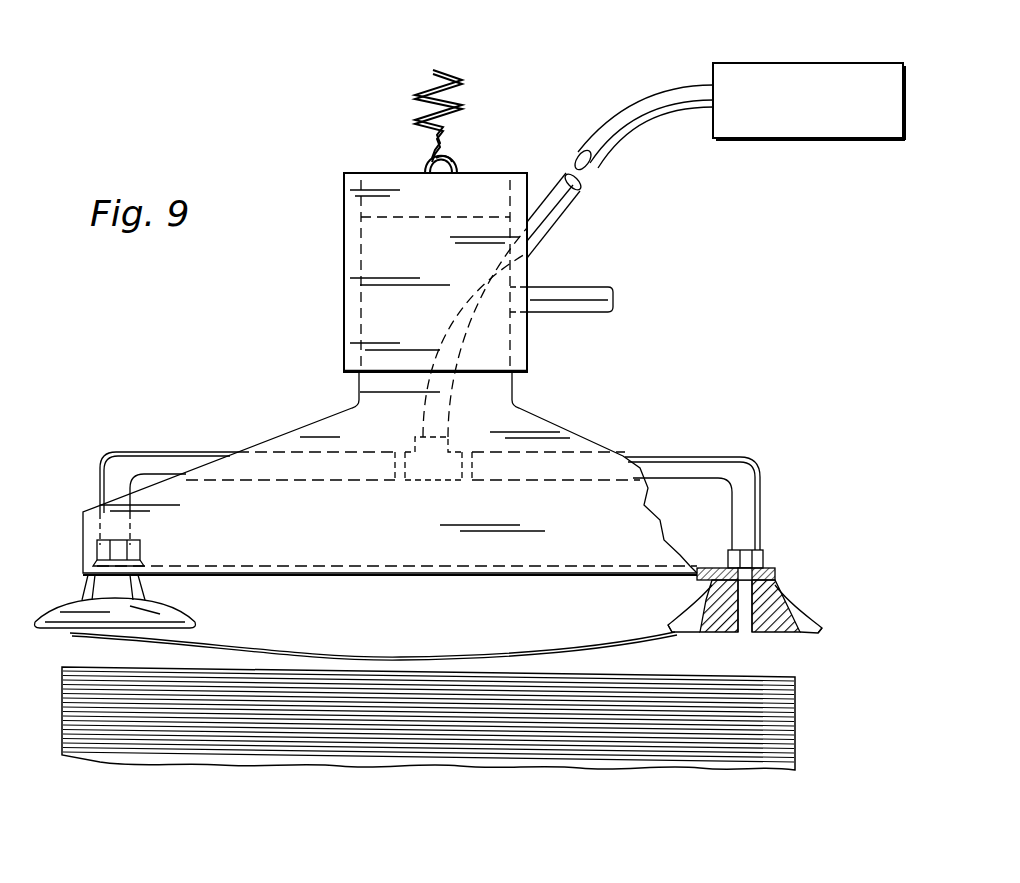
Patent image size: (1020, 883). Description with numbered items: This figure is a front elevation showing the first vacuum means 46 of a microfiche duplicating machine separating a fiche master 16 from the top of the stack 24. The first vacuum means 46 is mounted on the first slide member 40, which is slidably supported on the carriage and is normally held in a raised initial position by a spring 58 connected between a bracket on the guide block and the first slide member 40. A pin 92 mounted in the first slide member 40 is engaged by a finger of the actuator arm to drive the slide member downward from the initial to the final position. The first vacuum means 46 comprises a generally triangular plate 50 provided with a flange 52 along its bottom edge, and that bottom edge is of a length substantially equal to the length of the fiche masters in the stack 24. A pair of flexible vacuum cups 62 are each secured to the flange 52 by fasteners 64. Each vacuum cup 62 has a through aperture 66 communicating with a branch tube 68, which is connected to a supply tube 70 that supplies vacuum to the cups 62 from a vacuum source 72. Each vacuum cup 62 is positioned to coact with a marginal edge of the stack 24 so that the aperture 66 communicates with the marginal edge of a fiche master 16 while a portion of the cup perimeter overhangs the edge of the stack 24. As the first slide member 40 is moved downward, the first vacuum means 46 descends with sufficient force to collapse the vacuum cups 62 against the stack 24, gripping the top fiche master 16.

The fiche master 16 is at (383, 653).
The stack of fiche masters 24 is at (450, 753).
The first slide member 40 is at (492, 172).
The first vacuum means 46 is at (584, 373).
The generally triangular plate 50 is at (560, 432).
The flange 52 is at (700, 568).
The spring 58 is at (455, 78).
The flexible vacuum cups 62 is at (70, 610).
The fasteners 64 is at (760, 553).
The through aperture 66 is at (746, 600).
The branch tube 68 is at (705, 458).
The supply tube 70 is at (606, 152).
The vacuum source 72 is at (728, 63).
The pin 92 is at (590, 292).